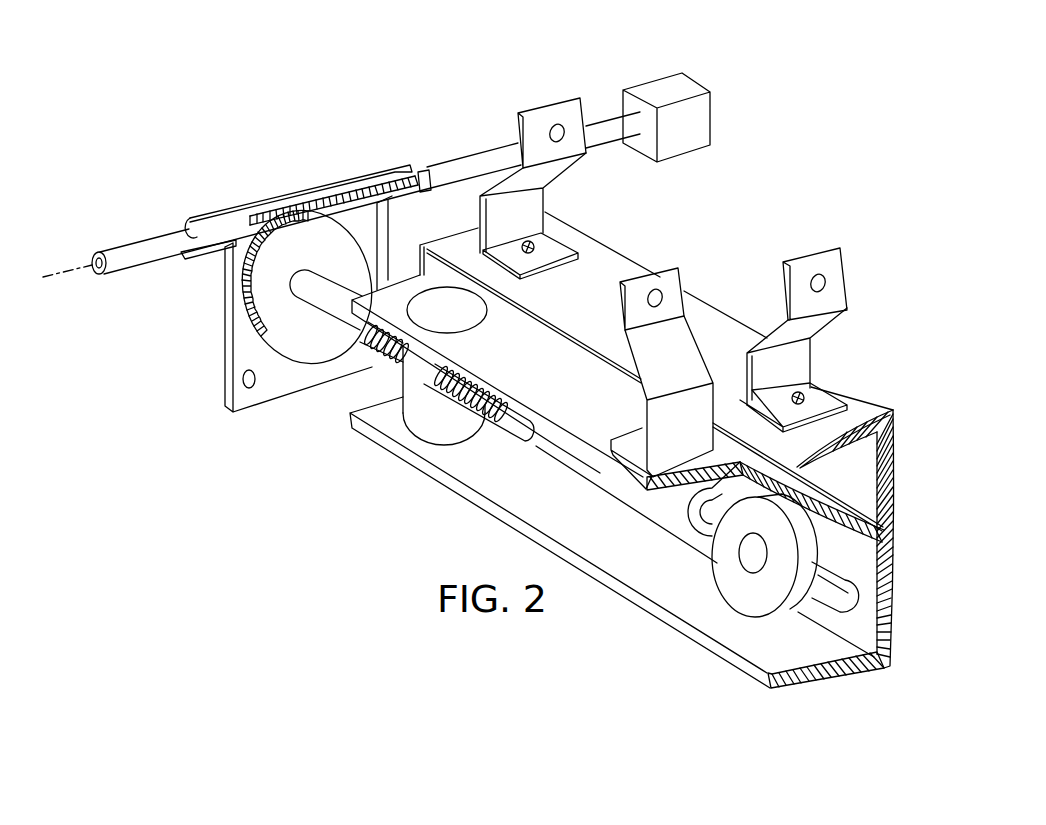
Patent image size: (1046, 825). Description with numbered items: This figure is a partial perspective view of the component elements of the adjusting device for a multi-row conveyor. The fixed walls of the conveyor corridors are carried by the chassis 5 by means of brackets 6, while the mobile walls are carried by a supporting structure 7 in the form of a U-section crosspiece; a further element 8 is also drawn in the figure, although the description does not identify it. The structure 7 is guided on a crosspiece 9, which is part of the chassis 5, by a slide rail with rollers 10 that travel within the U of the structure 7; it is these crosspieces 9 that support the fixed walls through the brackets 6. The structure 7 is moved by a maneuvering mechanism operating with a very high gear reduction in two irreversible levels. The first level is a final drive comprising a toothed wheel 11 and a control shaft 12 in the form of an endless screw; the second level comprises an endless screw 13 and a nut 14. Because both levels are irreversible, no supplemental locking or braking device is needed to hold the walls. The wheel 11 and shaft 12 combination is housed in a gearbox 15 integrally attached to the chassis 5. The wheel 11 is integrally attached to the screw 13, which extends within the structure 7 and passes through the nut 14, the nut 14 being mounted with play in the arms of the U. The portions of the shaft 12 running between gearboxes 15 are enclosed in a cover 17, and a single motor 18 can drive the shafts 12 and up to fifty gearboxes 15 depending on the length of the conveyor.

The chassis 5 is at (613, 242).
The brackets 6 is at (568, 120).
The supporting structure 7 is at (880, 637).
The bracket 8 is at (673, 283).
The crosspiece 9 is at (883, 442).
The rollers 10 is at (745, 582).
The toothed wheel 11 is at (267, 302).
The control shaft 12 is at (358, 190).
The endless screw 13 is at (372, 340).
The nut 14 is at (427, 417).
The gearbox 15 is at (252, 200).
The cover 17 is at (139, 250).
The motor 18 is at (682, 87).